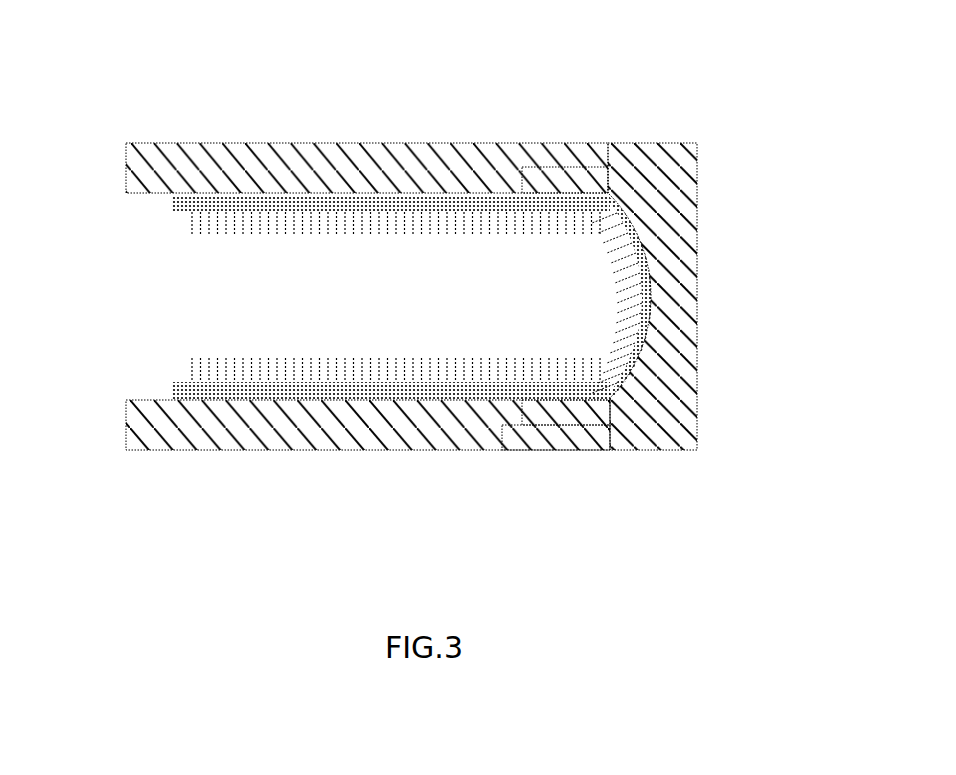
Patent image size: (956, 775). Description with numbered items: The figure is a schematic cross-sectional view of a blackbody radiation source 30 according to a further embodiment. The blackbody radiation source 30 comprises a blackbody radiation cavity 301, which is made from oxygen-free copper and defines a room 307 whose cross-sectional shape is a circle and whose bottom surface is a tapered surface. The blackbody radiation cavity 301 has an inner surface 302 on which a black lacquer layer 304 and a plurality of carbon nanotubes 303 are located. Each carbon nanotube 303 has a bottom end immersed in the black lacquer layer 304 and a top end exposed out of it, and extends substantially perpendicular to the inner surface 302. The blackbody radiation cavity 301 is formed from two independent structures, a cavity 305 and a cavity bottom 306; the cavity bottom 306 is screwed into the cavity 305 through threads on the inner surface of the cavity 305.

The blackbody radiation source 30 is at (398, 70).
The blackbody radiation cavity 301 is at (805, 402).
The inner surface 302 is at (148, 398).
The carbon nanotubes 303 is at (540, 222).
The black lacquer layer 304 is at (172, 205).
The cavity 305 is at (500, 425).
The cavity bottom 306 is at (657, 410).
The room 307 is at (322, 312).